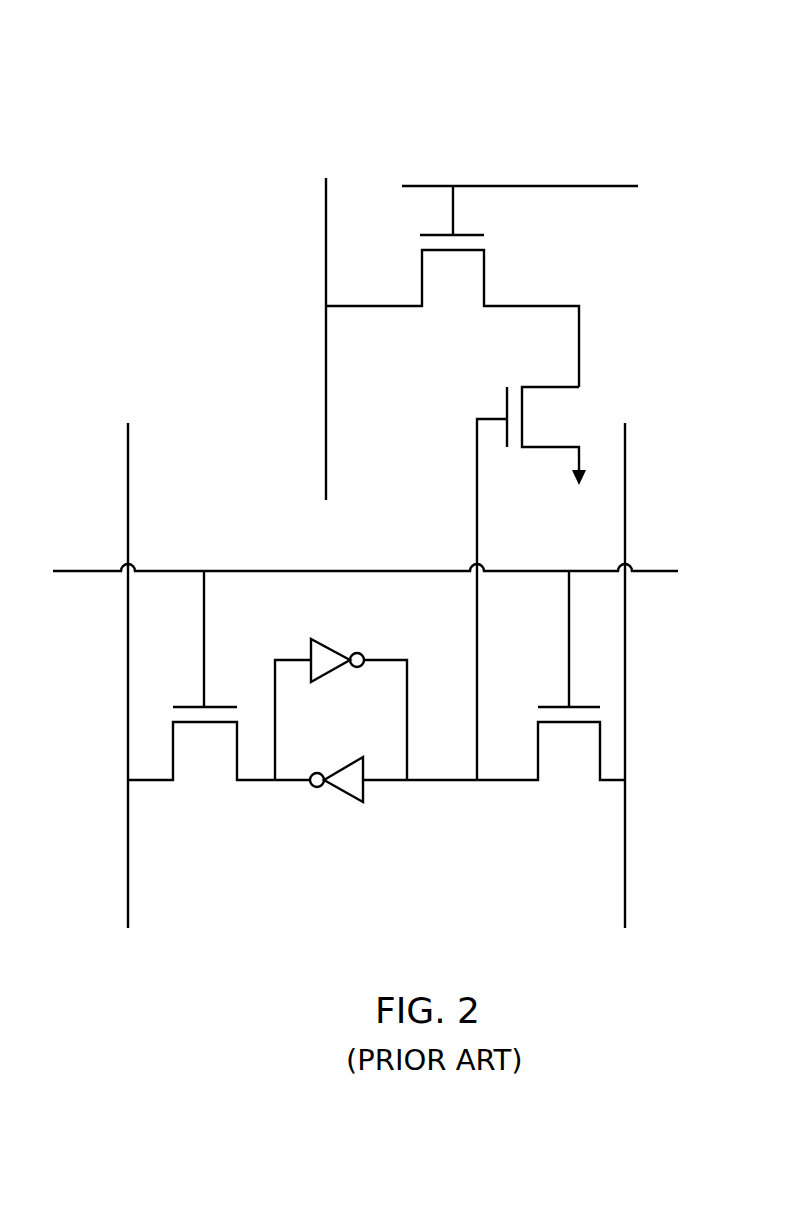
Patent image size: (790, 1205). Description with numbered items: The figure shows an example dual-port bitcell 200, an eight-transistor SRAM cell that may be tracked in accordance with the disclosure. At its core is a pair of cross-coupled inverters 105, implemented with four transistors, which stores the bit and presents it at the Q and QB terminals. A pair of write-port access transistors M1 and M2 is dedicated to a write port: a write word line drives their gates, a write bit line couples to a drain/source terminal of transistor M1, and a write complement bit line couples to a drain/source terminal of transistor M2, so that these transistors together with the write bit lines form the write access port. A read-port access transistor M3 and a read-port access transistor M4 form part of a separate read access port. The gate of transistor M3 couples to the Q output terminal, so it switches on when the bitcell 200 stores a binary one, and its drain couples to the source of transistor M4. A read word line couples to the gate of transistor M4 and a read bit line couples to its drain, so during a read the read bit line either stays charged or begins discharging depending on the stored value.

The dual-port bitcell 200 is at (133, 84).
The pair of cross-coupled inverters 105 is at (276, 628).
The read-port access transistor M4 is at (452, 286).
The read-port access transistor M3 is at (531, 583).
The write-port access transistor M2 is at (219, 675).
The write-port access transistor M1 is at (494, 675).